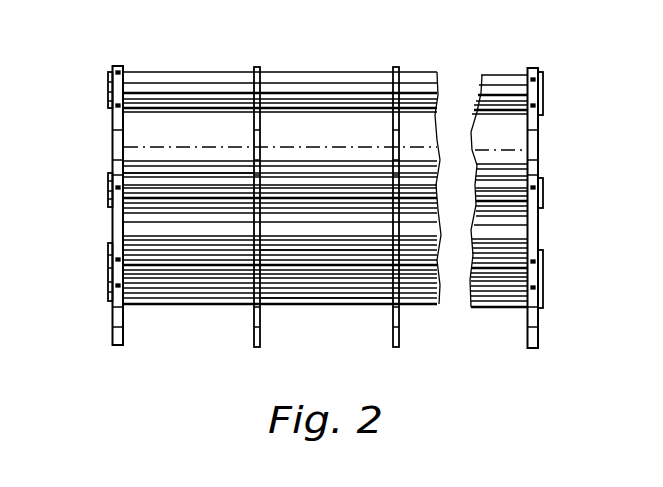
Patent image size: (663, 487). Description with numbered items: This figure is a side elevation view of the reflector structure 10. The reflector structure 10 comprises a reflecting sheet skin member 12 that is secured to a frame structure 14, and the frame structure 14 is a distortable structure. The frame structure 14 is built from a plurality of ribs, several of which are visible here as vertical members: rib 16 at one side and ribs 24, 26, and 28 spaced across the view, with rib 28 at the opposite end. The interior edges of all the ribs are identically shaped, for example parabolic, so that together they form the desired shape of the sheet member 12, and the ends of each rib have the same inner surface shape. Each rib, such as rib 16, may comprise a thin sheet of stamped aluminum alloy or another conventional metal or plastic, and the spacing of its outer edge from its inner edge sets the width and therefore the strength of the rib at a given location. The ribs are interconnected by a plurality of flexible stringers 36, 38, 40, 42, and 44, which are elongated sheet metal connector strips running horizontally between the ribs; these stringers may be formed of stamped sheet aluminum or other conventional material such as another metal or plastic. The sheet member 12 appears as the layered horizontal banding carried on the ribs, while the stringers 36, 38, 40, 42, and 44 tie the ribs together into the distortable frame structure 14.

The reflector structure 10 is at (195, 61).
The reflecting sheet skin member 12 is at (312, 115).
The frame structure 14 is at (546, 168).
The rib 16 is at (538, 143).
The rib 24 is at (393, 129).
The rib 26 is at (254, 132).
The rib 28 is at (117, 131).
The flexible stringer 36 is at (221, 197).
The flexible stringer 38 is at (338, 250).
The flexible stringer 40 is at (350, 297).
The flexible stringer 42 is at (111, 260).
The flexible stringer 44 is at (112, 186).